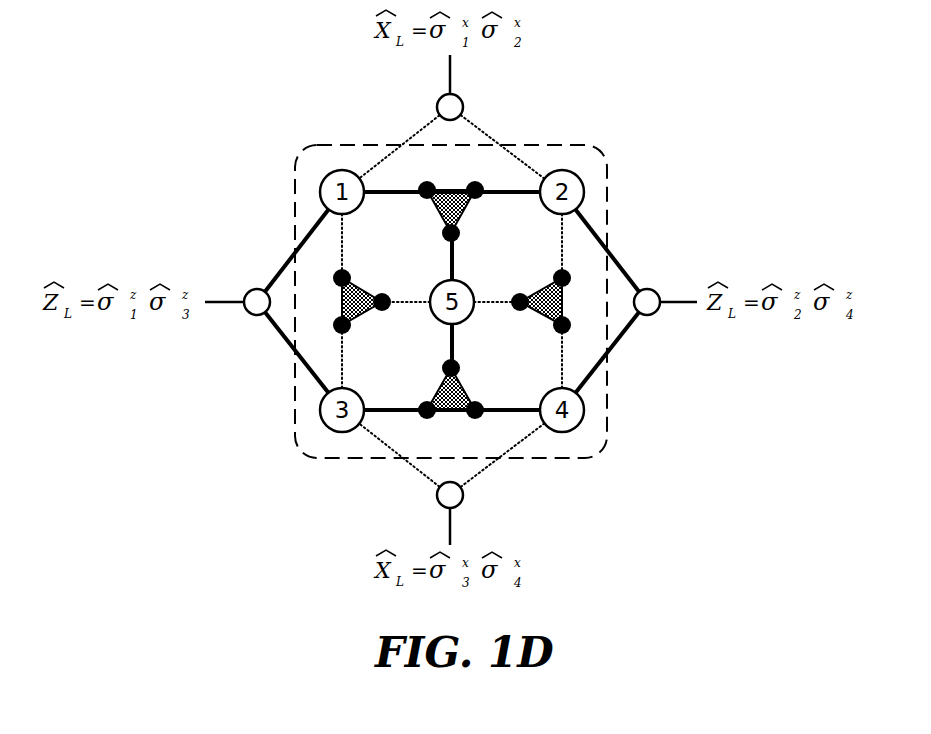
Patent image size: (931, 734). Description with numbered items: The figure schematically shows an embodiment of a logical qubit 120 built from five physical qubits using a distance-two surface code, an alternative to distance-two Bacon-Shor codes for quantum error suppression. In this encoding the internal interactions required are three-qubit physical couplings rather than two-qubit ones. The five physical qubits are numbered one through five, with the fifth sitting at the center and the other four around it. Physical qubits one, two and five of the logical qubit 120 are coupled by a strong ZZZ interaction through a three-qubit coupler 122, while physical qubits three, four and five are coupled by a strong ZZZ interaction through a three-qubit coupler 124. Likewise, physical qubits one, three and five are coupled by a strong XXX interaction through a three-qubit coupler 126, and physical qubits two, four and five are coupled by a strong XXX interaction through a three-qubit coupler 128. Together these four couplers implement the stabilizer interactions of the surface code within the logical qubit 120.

The logical qubit 120 is at (336, 145).
The three-qubit coupler 122 is at (453, 190).
The three-qubit coupler 124 is at (453, 412).
The three-qubit coupler 126 is at (342, 305).
The three-qubit coupler 128 is at (565, 300).